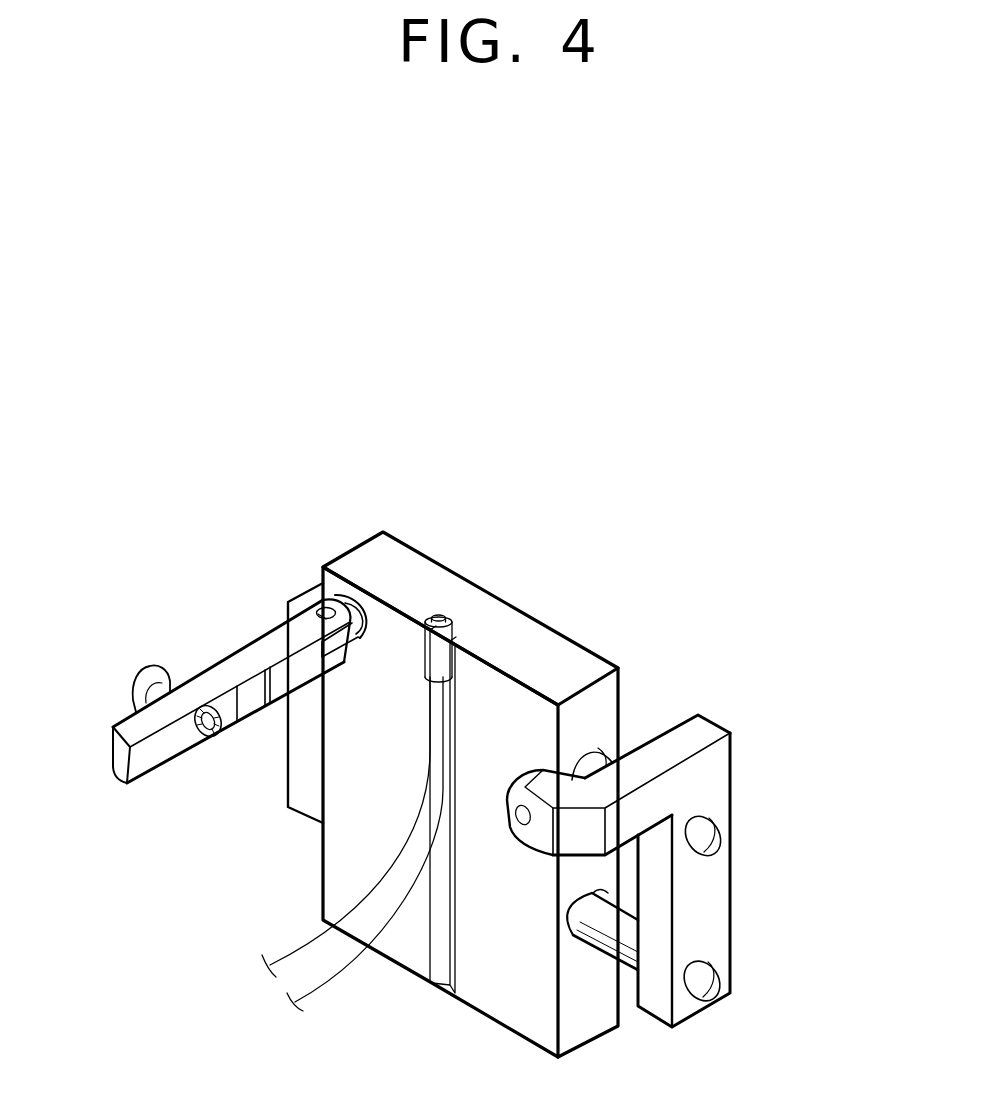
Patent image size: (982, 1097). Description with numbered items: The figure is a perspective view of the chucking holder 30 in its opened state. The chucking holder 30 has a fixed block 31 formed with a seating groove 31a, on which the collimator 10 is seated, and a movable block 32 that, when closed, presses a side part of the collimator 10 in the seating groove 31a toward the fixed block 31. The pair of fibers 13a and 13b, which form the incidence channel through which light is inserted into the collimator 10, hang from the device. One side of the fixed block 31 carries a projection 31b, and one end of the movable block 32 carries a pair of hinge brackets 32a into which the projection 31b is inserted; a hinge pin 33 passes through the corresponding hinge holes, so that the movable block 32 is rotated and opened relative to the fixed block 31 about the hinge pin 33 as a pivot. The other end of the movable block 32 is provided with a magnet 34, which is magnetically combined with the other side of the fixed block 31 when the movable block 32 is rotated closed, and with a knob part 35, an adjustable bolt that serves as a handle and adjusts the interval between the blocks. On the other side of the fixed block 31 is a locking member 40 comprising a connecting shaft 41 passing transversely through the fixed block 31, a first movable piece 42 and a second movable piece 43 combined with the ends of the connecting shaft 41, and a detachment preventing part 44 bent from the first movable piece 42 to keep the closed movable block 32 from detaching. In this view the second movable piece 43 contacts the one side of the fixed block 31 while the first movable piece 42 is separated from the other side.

The collimator 10 is at (457, 610).
The fiber 13a is at (282, 984).
The fiber 13b is at (337, 976).
The chucking holder 30 is at (677, 542).
The fixed block 31 is at (407, 552).
The seating groove 31a is at (433, 986).
The projection 31b is at (358, 660).
The movable block 32 is at (163, 770).
The hinge brackets 32a is at (288, 760).
The hinge pin 33 is at (320, 612).
The magnet 34 is at (218, 735).
The knob part 35 is at (135, 677).
The locking member 40 is at (837, 633).
The connecting shaft 41 is at (608, 760).
The first movable piece 42 is at (730, 927).
The second movable piece 43 is at (323, 594).
The detachment preventing part 44 is at (540, 828).